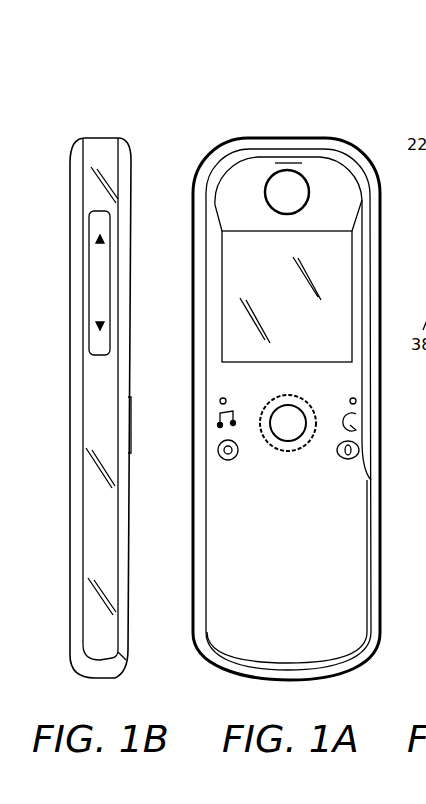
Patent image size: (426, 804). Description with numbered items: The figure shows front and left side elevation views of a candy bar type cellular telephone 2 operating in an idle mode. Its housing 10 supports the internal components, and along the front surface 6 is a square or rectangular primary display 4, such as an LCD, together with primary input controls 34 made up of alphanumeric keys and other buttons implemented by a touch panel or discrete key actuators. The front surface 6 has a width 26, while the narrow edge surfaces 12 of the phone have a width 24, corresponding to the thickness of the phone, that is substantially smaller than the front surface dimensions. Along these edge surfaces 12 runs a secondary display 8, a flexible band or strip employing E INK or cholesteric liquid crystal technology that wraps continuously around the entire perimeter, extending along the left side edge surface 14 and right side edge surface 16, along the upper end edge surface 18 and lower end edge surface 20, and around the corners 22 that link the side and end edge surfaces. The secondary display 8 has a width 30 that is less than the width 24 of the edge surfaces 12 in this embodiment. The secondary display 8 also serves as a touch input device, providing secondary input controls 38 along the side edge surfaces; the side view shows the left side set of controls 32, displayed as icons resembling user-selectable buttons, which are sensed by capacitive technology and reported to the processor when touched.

In FIG. 1A, the cellular telephone 2 is at (291, 125).
In FIG. 1A, the primary display 4 is at (362, 188).
In FIG. 1A, the front surface 6 is at (308, 185).
In FIG. 1B, the secondary display 8 is at (107, 138).
In FIG. 1A, the housing 10 is at (337, 173).
In FIG. 1A, the edge surfaces 12 is at (223, 155).
In FIG. 1A, the left side edge surface 14 is at (193, 355).
In FIG. 1A, the right side edge surface 16 is at (381, 295).
In FIG. 1A, the upper end edge surface 18 is at (251, 149).
In FIG. 1A, the lower end edge surface 20 is at (335, 678).
In FIG. 1A, the corners 22 is at (376, 172).
In FIG. 1B, the width of the edge surfaces 24 is at (69, 43).
In FIG. 1A, the width of the front surface 26 is at (377, 50).
In FIG. 1B, the width of the secondary display 30 is at (135, 83).
In FIG. 1B, the left side set of controls 32 is at (90, 233).
In FIG. 1A, the primary input controls 34 is at (362, 493).
In FIG. 1B, the secondary input controls 38 is at (100, 302).